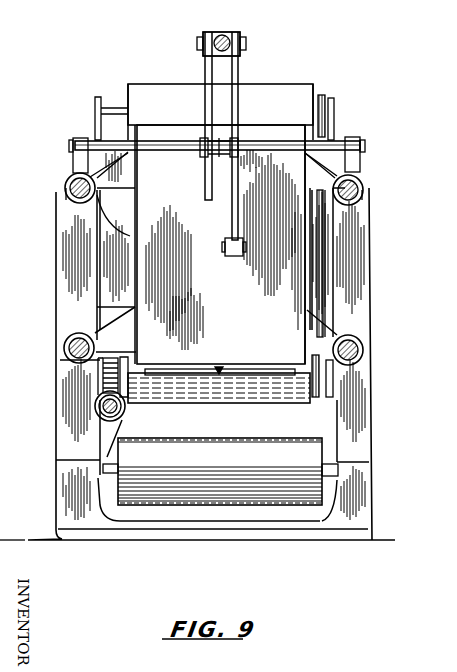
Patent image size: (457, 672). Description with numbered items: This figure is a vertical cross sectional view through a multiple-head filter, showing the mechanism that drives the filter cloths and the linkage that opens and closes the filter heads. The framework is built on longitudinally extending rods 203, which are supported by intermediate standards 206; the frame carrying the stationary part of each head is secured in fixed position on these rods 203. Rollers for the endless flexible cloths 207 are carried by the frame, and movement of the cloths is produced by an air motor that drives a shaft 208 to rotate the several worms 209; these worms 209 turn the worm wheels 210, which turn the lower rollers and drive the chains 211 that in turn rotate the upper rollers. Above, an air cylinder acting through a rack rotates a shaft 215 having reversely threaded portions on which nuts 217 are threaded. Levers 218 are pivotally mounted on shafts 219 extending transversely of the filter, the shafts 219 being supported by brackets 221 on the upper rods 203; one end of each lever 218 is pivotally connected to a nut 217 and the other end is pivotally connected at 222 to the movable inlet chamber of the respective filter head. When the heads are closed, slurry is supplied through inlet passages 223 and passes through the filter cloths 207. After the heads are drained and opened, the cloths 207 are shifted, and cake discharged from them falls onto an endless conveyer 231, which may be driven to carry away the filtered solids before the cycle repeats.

The longitudinally extending rods 203 is at (67, 194).
The intermediate standards 206 is at (370, 395).
The endless flexible cloths 207 is at (158, 403).
The shaft 208 is at (111, 414).
The worms 209 is at (95, 403).
The worm wheels 210 is at (103, 380).
The chains 211 is at (322, 258).
The shaft 215 is at (223, 36).
The nuts 217 is at (239, 36).
The levers 218 is at (210, 80).
The shafts 219 is at (338, 143).
The brackets 221 is at (77, 154).
The pivotal connection 222 is at (244, 250).
The inlet passages 223 is at (220, 375).
The endless conveyer 231 is at (280, 438).